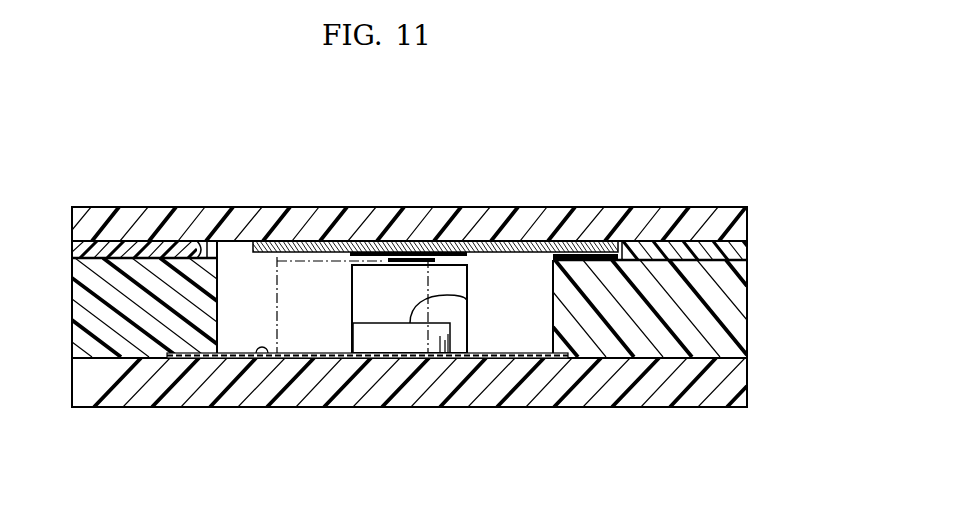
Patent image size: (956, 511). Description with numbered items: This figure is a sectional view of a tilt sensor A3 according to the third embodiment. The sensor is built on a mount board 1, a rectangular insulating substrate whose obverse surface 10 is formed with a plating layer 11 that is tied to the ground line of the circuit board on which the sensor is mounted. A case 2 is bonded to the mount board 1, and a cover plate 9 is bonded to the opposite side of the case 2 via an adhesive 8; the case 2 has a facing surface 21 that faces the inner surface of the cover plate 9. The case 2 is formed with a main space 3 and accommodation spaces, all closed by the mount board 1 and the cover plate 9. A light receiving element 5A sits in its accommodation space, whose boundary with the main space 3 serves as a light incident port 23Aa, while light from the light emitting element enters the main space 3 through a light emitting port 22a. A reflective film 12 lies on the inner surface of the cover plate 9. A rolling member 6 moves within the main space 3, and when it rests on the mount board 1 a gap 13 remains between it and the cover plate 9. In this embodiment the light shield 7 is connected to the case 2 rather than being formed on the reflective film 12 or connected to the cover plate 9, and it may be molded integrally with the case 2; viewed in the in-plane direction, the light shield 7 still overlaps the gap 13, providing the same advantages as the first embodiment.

The tilt sensor A3 is at (753, 212).
The mount board 1 is at (740, 390).
The case 2 is at (732, 322).
The main space 3 is at (438, 277).
The light receiving element 5A is at (437, 280).
The rolling member 6 is at (277, 257).
The light shield 7 is at (362, 254).
The adhesive 8 is at (75, 238).
The cover plate 9 is at (122, 232).
The obverse surface of the mount board 10 is at (253, 357).
The plating layer 11 is at (543, 358).
The reflective film 12 is at (452, 246).
The gap 13 is at (400, 258).
The facing surface 21 is at (205, 243).
The light emitting port 22a is at (550, 256).
The light incident port 23Aa is at (392, 312).